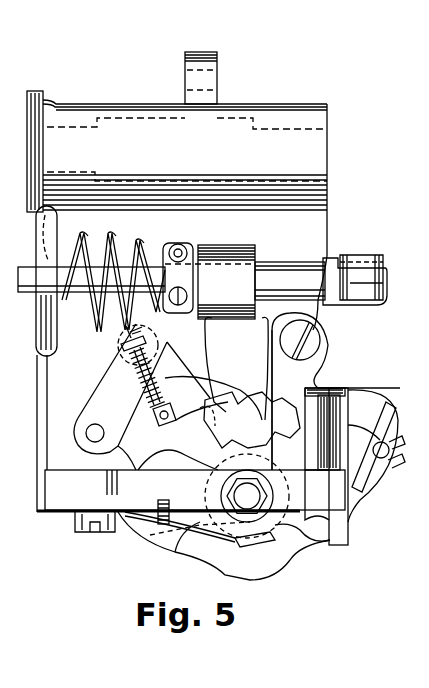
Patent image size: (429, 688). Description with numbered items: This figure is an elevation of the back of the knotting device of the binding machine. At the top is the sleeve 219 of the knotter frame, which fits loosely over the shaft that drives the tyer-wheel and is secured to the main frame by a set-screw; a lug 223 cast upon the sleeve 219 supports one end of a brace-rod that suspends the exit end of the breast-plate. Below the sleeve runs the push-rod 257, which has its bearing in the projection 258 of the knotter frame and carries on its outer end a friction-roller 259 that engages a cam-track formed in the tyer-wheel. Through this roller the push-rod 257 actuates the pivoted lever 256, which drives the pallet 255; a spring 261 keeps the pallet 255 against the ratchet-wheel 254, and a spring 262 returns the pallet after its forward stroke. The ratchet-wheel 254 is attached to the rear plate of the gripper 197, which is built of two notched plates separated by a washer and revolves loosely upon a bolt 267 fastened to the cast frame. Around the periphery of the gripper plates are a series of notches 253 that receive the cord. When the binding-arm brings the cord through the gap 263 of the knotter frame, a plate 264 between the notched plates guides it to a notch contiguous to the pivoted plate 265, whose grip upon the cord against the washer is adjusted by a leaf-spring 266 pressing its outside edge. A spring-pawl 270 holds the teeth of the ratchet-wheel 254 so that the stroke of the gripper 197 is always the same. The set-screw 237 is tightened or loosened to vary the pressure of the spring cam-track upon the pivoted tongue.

The sleeve 219 is at (177, 171).
The lug 223 is at (201, 68).
The spring 262 is at (113, 278).
The projection 258 is at (226, 282).
The push-rod 257 is at (290, 281).
The friction-roller 259 is at (382, 280).
The spring 261 is at (151, 375).
The pivoted lever 256 is at (104, 382).
The gap 263 is at (236, 368).
The plate 264 is at (213, 399).
The pivoted plate 265 is at (336, 400).
The leaf-spring 266 is at (325, 429).
The pallet 255 is at (168, 406).
The gripper 197 is at (250, 420).
The bolt 267 is at (247, 496).
The ratchet-wheel 254 is at (302, 524).
The spring-pawl 270 is at (265, 540).
The notches 253 is at (224, 546).
The set-screw 237 is at (422, 398).